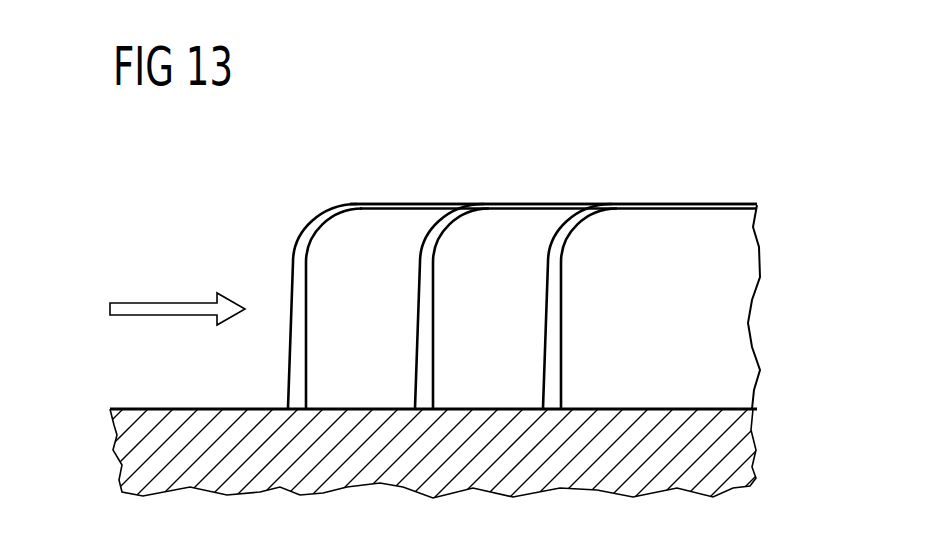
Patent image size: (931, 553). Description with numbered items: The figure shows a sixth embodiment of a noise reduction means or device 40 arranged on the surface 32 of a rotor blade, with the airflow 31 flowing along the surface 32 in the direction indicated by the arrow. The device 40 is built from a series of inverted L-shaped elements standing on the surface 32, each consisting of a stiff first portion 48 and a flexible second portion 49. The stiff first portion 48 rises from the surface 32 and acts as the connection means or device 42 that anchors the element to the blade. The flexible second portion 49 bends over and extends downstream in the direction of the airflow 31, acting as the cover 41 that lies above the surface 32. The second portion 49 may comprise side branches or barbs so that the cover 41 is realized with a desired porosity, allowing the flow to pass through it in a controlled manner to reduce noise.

The airflow 31 is at (167, 310).
The surfaces 32 is at (180, 408).
The noise reduction device 40 is at (581, 124).
The cover 41 is at (375, 203).
The connection device 42 is at (296, 333).
The first portion 48 is at (477, 306).
The second portion 49 is at (550, 168).